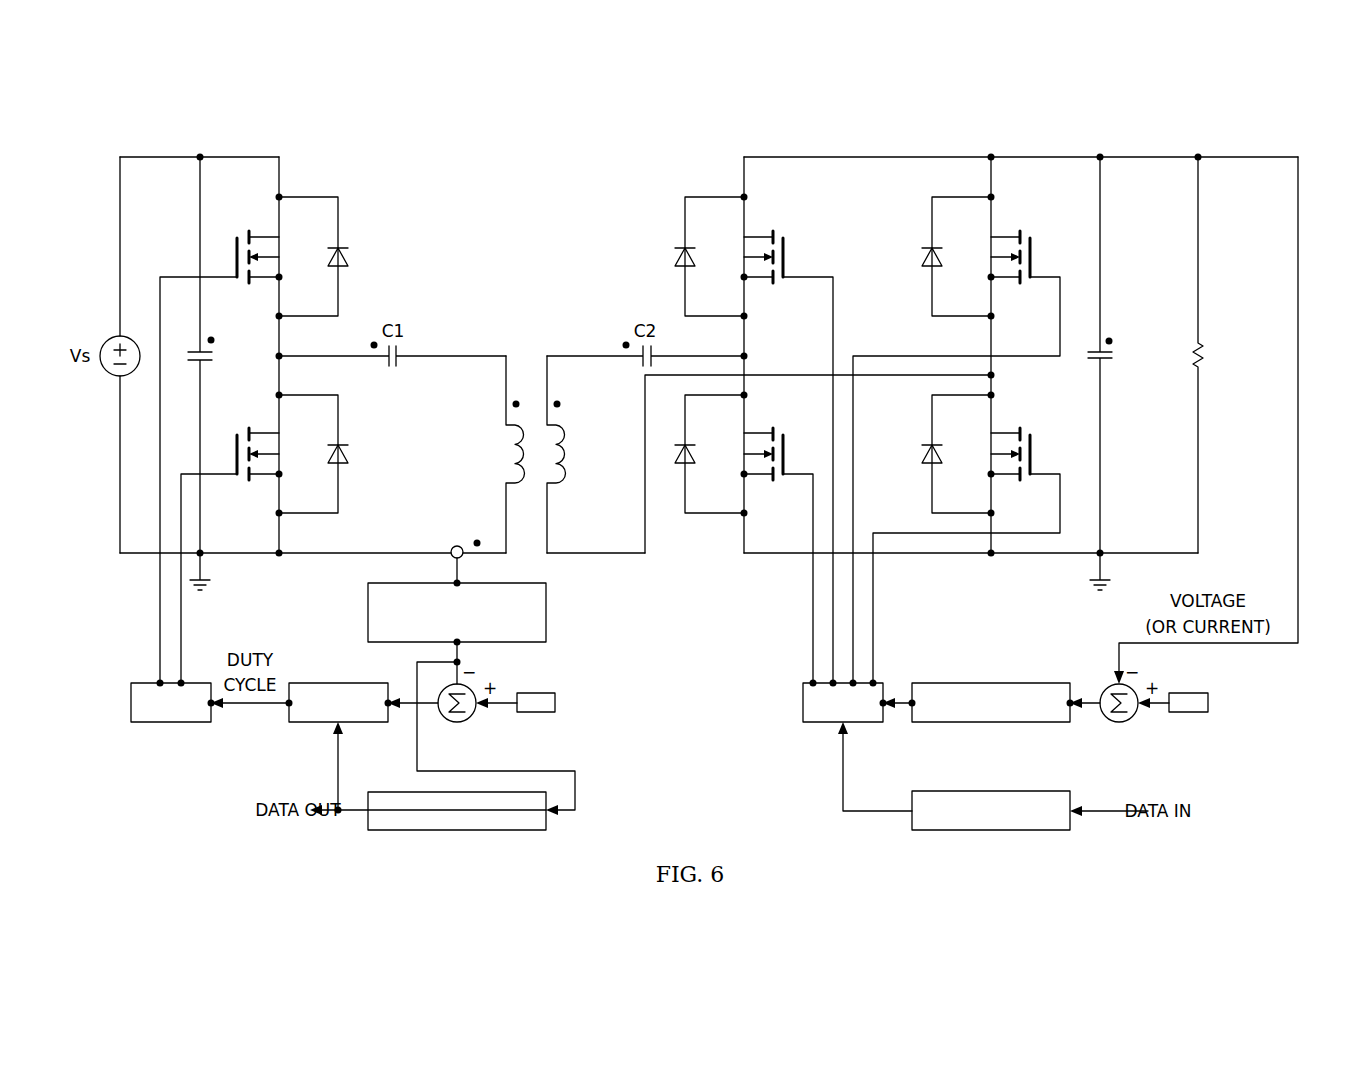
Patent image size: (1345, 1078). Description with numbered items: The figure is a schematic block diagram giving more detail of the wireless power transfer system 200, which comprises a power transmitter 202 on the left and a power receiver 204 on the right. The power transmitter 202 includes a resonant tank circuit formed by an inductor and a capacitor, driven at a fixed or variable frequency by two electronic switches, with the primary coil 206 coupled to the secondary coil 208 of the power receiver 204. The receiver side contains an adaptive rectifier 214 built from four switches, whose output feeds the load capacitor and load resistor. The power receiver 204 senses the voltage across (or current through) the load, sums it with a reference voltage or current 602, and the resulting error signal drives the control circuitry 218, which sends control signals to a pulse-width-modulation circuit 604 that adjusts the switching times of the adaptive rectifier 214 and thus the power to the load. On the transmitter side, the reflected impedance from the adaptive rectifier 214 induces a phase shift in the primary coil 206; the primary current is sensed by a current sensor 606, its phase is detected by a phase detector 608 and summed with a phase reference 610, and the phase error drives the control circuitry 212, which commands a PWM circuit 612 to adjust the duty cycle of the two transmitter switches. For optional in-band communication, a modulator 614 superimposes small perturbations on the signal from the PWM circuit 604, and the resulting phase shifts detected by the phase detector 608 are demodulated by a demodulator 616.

The wireless power transfer system 200 is at (482, 127).
The power transmitter 202 is at (344, 174).
The power receiver 204 is at (1265, 144).
The primary coil 206 is at (522, 428).
The secondary coil 208 is at (560, 437).
The control circuitry 212 is at (318, 722).
The adaptive rectifier 214 is at (678, 174).
The control circuitry 218 is at (992, 722).
The reference voltage (or current) 602 is at (1188, 712).
The pulse-width-modulation (PWM) circuit 604 is at (862, 722).
The current sensor 606 is at (454, 546).
The phase detector 608 is at (368, 612).
The phase reference 610 is at (538, 712).
The PWM circuit 612 is at (167, 722).
The modulator 614 is at (990, 830).
The demodulator 616 is at (458, 830).